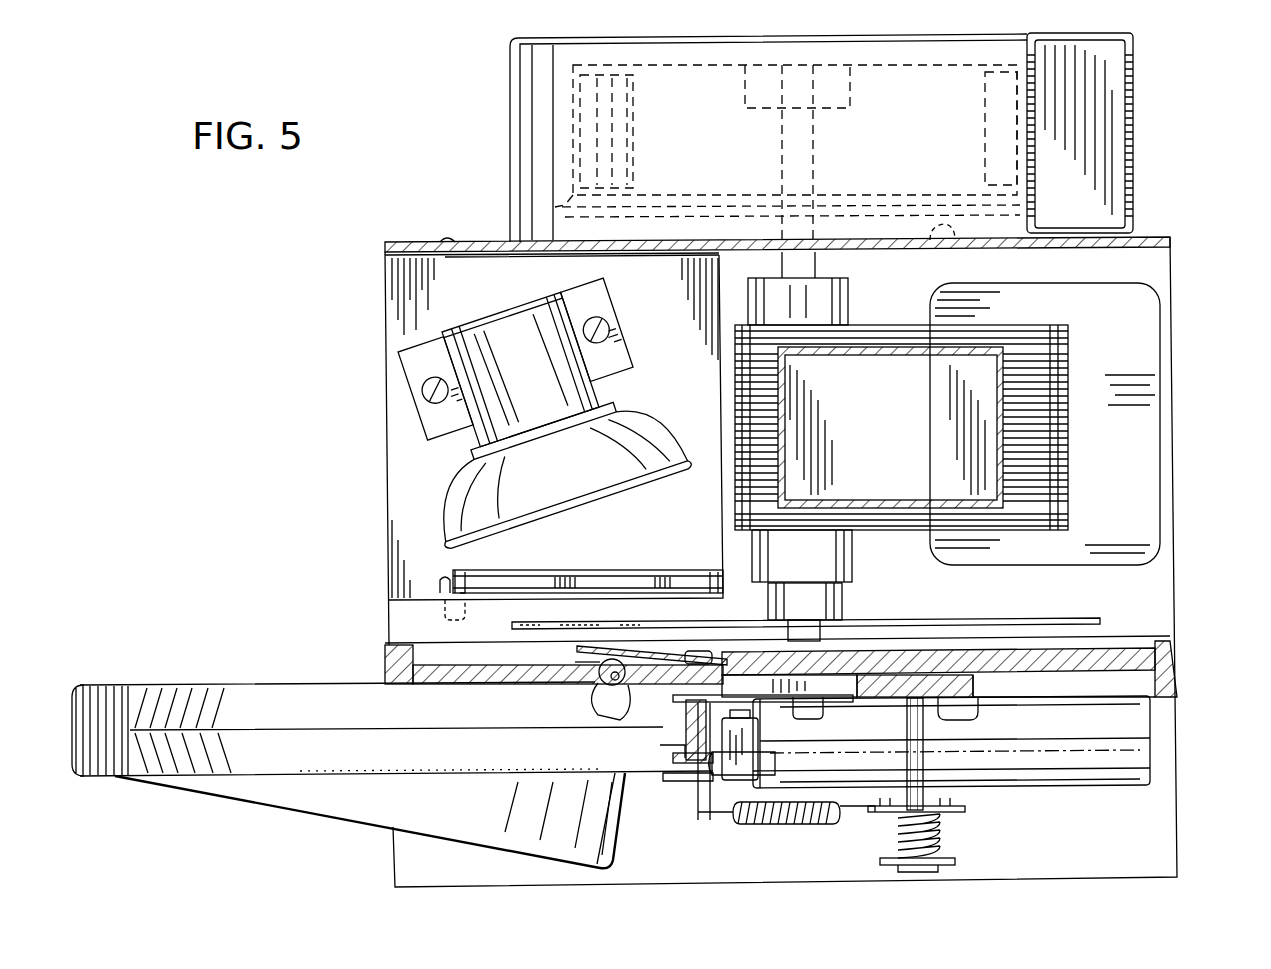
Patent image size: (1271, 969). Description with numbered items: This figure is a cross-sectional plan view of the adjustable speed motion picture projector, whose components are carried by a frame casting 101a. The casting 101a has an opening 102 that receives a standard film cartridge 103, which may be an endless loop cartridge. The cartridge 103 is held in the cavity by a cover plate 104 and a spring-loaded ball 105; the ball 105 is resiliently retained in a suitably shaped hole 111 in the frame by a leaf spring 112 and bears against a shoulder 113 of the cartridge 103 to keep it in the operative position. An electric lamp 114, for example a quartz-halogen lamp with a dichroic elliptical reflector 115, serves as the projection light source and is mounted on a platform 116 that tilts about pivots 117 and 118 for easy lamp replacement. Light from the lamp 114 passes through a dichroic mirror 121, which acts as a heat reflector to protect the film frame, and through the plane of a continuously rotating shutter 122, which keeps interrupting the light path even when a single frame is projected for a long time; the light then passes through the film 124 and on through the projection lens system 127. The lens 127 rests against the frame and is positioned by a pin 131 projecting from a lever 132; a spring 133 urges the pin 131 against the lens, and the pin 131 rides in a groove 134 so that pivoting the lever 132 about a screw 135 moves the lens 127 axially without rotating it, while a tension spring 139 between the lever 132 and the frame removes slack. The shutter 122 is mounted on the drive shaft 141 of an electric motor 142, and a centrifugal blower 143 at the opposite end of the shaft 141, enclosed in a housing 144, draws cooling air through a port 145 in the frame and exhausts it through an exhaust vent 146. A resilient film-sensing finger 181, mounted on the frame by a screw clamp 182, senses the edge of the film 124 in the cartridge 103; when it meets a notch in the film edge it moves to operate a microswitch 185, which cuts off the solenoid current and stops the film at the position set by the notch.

The casting 101a is at (1174, 652).
The opening 102 is at (455, 678).
The film cartridge 103 is at (235, 688).
The cover plate 104 is at (668, 781).
The spring-loaded ball 105 is at (600, 683).
The hole 111 is at (583, 678).
The leaf spring 112 is at (577, 650).
The shoulder 113 is at (610, 712).
The electric lamp 114 is at (470, 443).
The dichroic elliptical reflector 115 is at (490, 497).
The platform 116 is at (405, 295).
The pivot 117 is at (447, 238).
The pivot 118 is at (440, 611).
The dichroic mirror 121 is at (628, 580).
The continuously rotating shutter 122 is at (697, 625).
The film 124 is at (683, 738).
The projection lens system 127 is at (1100, 768).
The pin 131 is at (1030, 766).
The lever 132 is at (965, 810).
The spring 133 is at (945, 838).
The groove 134 is at (920, 750).
The screw 135 is at (945, 866).
The tension spring 139 is at (778, 825).
The drive shaft 141 is at (800, 257).
The electric motor 142 is at (866, 515).
The centrifugal blower 143 is at (920, 64).
The housing 144 is at (520, 126).
The port 145 is at (938, 230).
The exhaust vent 146 is at (1110, 144).
The film-sensing finger 181 is at (686, 707).
The screw clamp 182 is at (978, 714).
The microswitch 185 is at (760, 740).